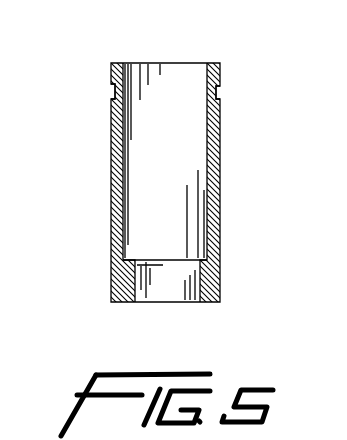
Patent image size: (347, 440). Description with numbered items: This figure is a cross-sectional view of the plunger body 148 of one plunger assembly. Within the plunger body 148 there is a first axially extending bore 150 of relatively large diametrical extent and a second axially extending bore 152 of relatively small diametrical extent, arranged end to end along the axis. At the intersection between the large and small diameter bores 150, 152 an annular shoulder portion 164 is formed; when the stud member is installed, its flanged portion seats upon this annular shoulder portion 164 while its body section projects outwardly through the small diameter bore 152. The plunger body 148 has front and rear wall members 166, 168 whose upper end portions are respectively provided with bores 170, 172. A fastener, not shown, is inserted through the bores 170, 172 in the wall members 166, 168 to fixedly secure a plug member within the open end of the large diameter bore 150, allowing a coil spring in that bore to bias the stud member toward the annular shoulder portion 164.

The plunger body 148 is at (221, 128).
The first axially extending bore 150 is at (192, 172).
The second axially extending bore 152 is at (162, 291).
The annular shoulder portion 164 is at (130, 252).
The front wall member 166 is at (221, 208).
The rear wall member 168 is at (111, 195).
The bore 170 is at (221, 88).
The bore 172 is at (110, 73).